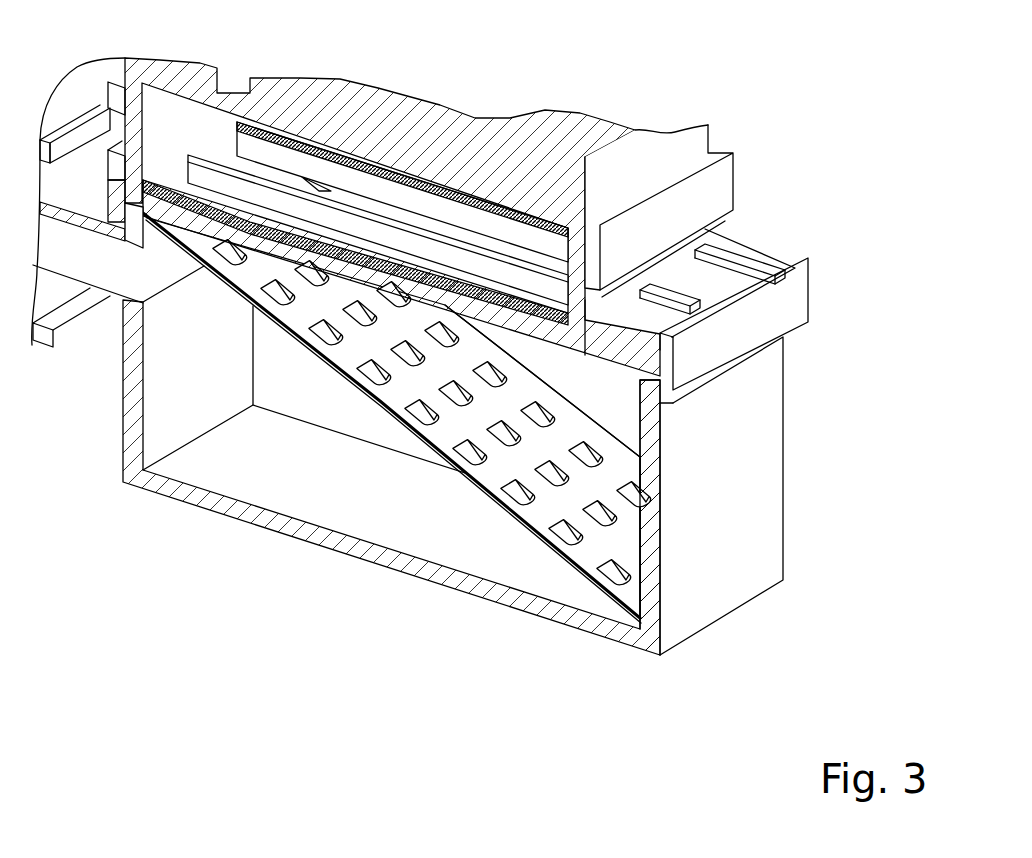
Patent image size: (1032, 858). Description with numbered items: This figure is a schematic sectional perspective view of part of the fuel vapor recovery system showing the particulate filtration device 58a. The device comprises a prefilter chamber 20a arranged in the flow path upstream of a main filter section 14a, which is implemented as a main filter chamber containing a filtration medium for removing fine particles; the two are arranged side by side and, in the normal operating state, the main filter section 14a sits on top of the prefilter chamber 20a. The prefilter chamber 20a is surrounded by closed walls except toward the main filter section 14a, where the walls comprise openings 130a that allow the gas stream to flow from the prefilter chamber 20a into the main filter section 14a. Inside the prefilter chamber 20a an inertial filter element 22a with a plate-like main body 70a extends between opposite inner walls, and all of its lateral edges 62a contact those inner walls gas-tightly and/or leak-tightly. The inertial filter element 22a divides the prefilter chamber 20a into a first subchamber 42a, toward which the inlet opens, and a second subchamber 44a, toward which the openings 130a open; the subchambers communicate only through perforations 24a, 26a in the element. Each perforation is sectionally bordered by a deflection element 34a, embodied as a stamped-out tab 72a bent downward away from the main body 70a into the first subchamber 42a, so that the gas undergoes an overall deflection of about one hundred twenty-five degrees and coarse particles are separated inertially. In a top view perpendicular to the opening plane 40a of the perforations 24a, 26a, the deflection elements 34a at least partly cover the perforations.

The openings 130a is at (365, 193).
The main filter section 14a is at (462, 262).
The lateral edges 62a is at (560, 408).
The particulate filtration device 58a is at (771, 233).
The second subchamber 44a is at (586, 398).
The deflection elements 34a is at (605, 462).
The perforations 24a is at (575, 479).
The perforations 26a is at (548, 482).
The first subchamber 42a is at (240, 465).
The prefilter chamber 20a is at (357, 506).
The main body 70a is at (404, 398).
The tabs 72a is at (466, 456).
The opening plane 40a is at (520, 530).
The inertial filter element 22a is at (597, 553).